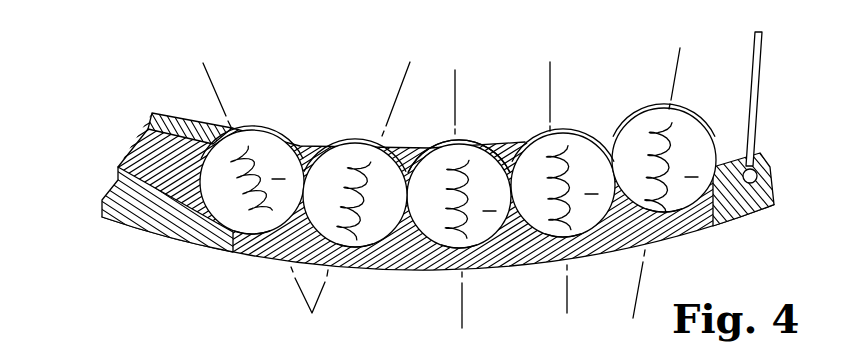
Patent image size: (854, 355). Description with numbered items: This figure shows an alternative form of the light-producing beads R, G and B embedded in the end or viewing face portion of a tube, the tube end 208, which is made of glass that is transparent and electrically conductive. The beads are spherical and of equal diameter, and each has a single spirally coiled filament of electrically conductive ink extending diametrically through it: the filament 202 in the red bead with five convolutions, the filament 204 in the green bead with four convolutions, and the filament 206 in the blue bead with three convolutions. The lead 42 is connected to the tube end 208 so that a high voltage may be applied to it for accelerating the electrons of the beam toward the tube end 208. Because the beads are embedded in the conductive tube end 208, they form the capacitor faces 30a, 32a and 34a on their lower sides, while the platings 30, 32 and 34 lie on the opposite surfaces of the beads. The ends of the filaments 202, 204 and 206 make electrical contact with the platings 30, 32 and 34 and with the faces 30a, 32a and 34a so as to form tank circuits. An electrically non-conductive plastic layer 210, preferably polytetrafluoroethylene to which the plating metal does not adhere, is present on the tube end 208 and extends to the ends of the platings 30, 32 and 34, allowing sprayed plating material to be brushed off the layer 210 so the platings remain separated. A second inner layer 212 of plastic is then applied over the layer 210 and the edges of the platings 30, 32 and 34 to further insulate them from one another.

The plating 30 is at (264, 130).
The plating 32 is at (350, 150).
The plating 34 is at (450, 160).
The capacitor face 30a is at (222, 224).
The capacitor face 32a is at (372, 243).
The capacitor face 34a is at (480, 242).
The lead 42 is at (757, 40).
The spirally coiled filament 202 is at (205, 146).
The spirally coiled filament 204 is at (350, 170).
The spirally coiled filament 206 is at (448, 155).
The tube end 208 is at (125, 190).
The electrically non-conductive plastic layer 210 is at (152, 150).
The second inner layer 212 is at (160, 113).